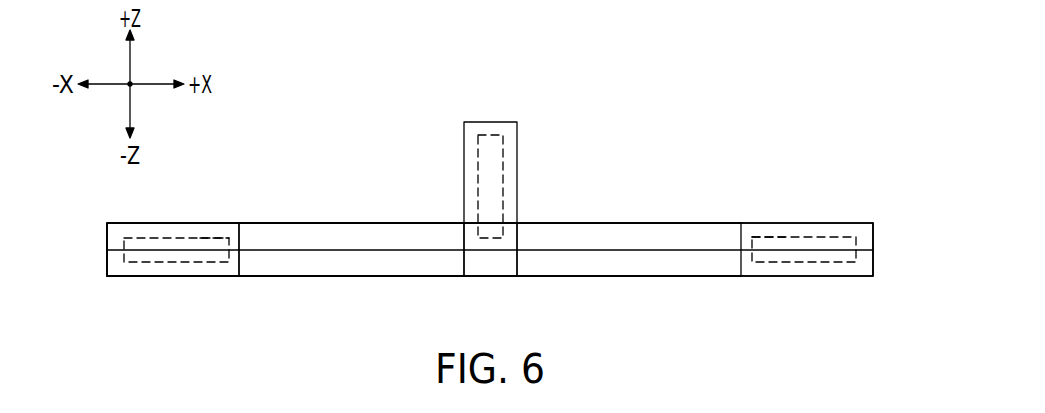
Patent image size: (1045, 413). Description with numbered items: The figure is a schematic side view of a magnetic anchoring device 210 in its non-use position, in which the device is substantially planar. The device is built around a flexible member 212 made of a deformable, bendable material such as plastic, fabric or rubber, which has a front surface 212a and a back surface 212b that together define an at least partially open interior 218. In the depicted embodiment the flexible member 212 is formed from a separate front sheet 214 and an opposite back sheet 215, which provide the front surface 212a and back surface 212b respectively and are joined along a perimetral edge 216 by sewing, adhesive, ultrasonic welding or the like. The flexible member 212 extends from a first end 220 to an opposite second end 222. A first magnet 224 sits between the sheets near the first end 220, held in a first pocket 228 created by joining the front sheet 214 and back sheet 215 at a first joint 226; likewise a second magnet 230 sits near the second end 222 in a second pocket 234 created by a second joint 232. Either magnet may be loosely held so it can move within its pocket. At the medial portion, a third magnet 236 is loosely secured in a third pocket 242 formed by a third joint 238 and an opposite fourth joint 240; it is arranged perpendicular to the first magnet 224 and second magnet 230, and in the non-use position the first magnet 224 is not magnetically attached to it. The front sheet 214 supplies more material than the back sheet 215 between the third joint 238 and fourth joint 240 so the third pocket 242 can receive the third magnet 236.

The magnetic anchoring device 210 is at (490, 191).
The flexible member 212 is at (490, 171).
The front surface 212a is at (636, 222).
The back surface 212b is at (636, 277).
The front sheet 214 is at (128, 230).
The back sheet 215 is at (127, 272).
The perimetral edge 216 is at (570, 253).
The open interior 218 is at (365, 265).
The first end 220 is at (107, 248).
The second end 222 is at (874, 247).
The first magnet 224 is at (175, 237).
The first joint 226 is at (241, 268).
The first pocket 228 is at (215, 231).
The second magnet 230 is at (805, 236).
The second joint 232 is at (739, 267).
The second pocket 234 is at (766, 233).
The third magnet 236 is at (504, 157).
The third joint 238 is at (463, 264).
The fourth joint 240 is at (518, 265).
The third pocket 242 is at (472, 132).